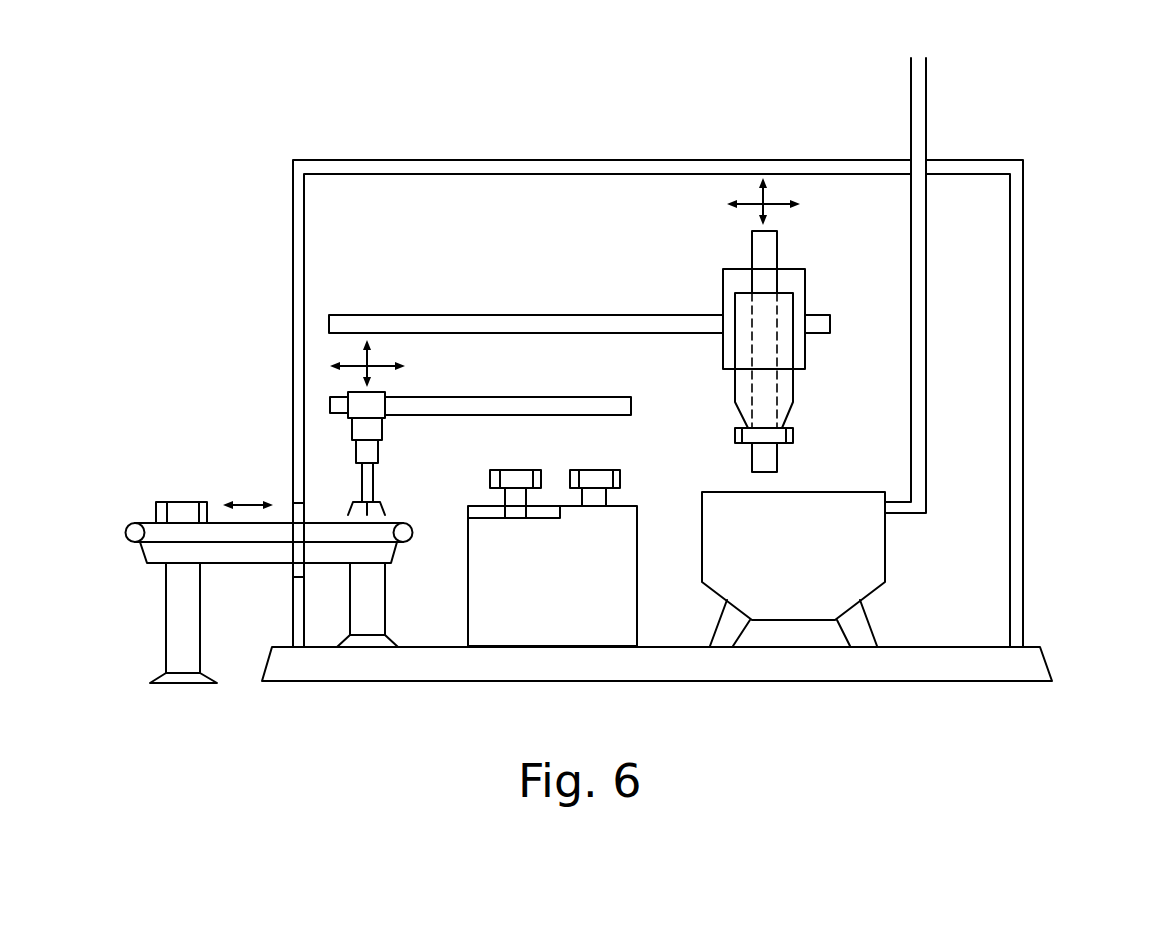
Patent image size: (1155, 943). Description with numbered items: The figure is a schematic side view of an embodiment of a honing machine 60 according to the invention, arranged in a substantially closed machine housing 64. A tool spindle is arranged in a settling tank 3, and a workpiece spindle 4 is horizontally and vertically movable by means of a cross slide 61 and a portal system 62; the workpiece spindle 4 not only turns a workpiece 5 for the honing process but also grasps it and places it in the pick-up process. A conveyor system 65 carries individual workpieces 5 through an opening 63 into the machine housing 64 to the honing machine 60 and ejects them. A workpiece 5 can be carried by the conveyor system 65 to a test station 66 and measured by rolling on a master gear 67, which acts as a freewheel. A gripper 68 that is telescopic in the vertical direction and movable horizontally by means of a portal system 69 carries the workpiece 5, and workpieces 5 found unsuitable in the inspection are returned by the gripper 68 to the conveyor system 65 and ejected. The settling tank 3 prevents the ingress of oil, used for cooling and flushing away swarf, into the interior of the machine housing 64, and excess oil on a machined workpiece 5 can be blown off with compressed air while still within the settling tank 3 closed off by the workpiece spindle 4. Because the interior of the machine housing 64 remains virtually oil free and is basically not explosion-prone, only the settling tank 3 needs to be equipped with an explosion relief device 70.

The settling tank 3 is at (793, 592).
The workpiece spindle 4 is at (783, 395).
The workpiece 5 is at (793, 433).
The honing machine 60 is at (1056, 338).
The cross slide 61 is at (790, 278).
The portal system 62 is at (443, 325).
The opening 63 is at (300, 515).
The machine housing 64 is at (1015, 458).
The conveyor system 65 is at (134, 500).
The test station 66 is at (600, 530).
The master gear 67 is at (521, 478).
The gripper 68 is at (358, 428).
The portal system 69 is at (485, 405).
The explosion relief device 70 is at (922, 108).